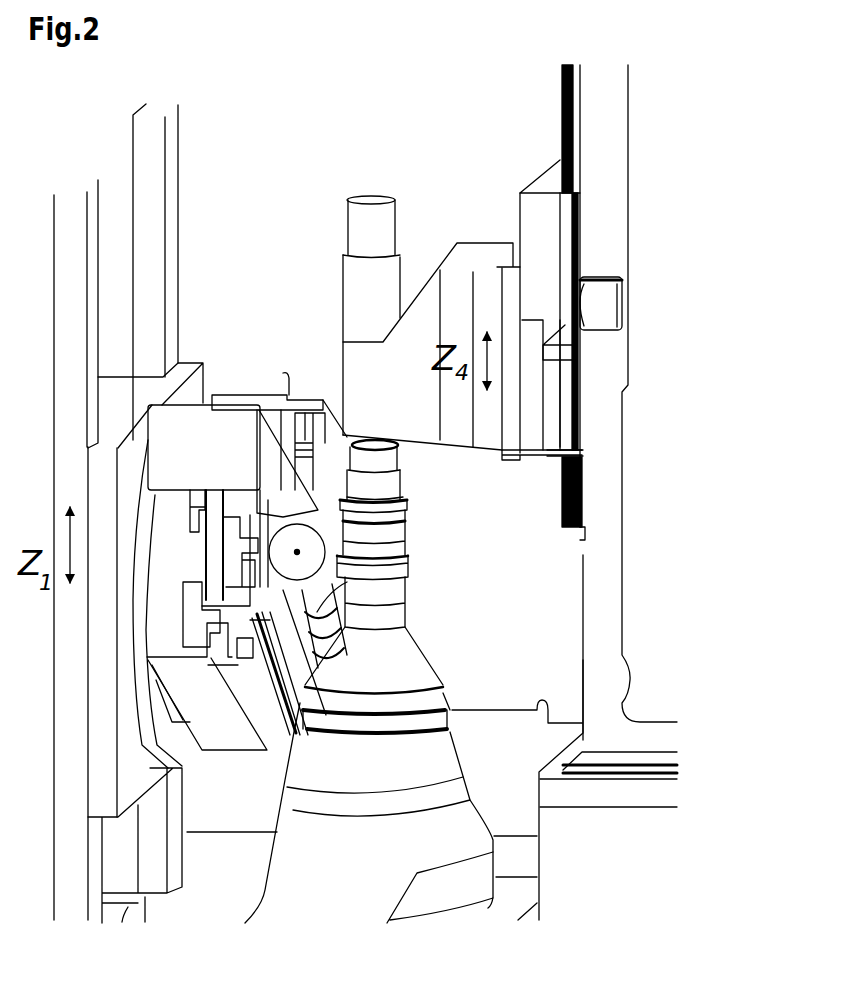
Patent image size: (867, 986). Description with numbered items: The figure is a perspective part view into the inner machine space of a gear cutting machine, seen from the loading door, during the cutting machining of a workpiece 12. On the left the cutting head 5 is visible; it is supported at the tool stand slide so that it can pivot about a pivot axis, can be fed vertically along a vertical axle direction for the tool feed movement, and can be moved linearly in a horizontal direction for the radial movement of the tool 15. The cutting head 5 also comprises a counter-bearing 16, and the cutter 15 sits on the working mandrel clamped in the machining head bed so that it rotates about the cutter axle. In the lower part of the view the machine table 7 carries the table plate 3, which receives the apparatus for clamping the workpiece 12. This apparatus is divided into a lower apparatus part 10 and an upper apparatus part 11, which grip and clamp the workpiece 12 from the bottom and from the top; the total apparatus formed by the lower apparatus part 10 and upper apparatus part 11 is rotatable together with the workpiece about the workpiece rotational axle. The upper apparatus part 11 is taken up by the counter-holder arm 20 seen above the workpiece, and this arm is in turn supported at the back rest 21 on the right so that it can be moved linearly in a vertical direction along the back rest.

The table plate 3 is at (455, 701).
The cutting head 5 is at (223, 391).
The machine table 7 is at (450, 762).
The lower apparatus part 10 is at (403, 665).
The upper apparatus part 11 is at (395, 528).
The workpiece 12 is at (402, 570).
The tool 15 is at (275, 793).
The counter-bearing 16 is at (311, 520).
The counter-holder arm 20 is at (438, 303).
The back rest 21 is at (608, 240).